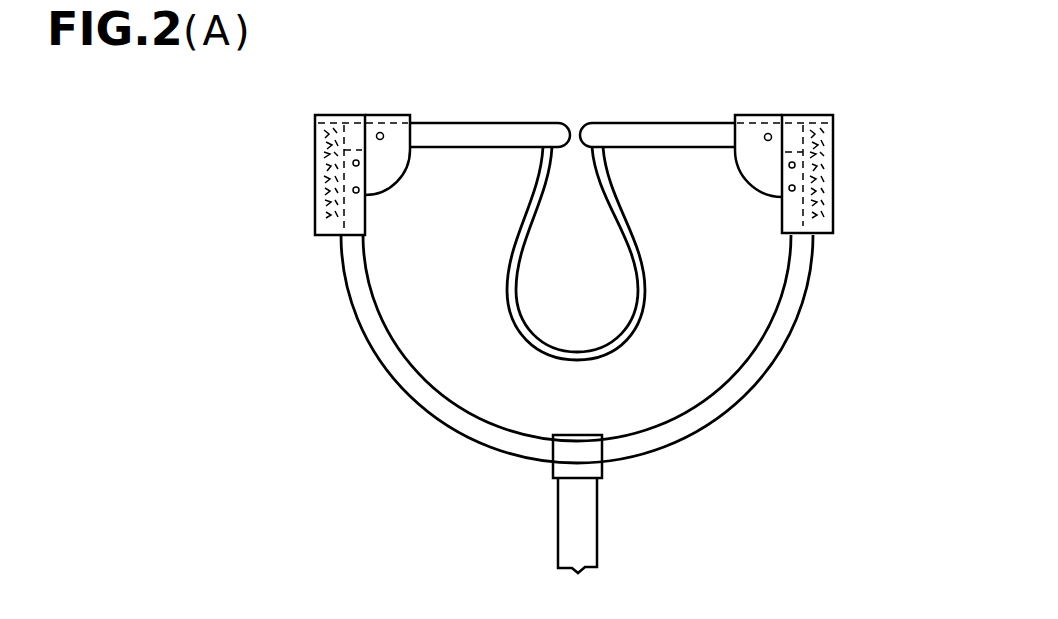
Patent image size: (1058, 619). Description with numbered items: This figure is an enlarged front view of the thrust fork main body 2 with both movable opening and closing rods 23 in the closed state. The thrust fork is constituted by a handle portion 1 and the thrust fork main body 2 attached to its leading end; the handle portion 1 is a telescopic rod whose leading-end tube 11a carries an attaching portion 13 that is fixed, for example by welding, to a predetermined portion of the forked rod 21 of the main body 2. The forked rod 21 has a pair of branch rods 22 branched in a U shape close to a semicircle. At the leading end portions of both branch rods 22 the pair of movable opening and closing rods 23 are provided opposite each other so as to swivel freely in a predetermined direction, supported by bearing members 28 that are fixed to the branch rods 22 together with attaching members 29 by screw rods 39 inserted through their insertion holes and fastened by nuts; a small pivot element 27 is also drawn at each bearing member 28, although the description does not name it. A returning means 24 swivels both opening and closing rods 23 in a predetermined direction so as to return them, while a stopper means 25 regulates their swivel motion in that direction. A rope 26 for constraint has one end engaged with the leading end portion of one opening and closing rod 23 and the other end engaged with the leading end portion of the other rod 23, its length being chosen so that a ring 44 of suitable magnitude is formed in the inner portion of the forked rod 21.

The handle portion 1 is at (582, 504).
The thrust fork main body 2 is at (603, 356).
The tube 11a is at (600, 536).
The attaching portion 13 is at (565, 462).
The forked rod 21 is at (732, 393).
The branch rods 22 is at (406, 382).
The movable opening and closing rods 23 is at (499, 123).
The returning means 24 is at (318, 183).
The stopper means 25 is at (573, 148).
The rope for constraint 26 is at (613, 281).
The pin 27 is at (383, 139).
The bearing members 28 is at (388, 180).
The attaching members 29 is at (300, 118).
The screw rods 39 is at (353, 193).
The ring 44 is at (565, 323).